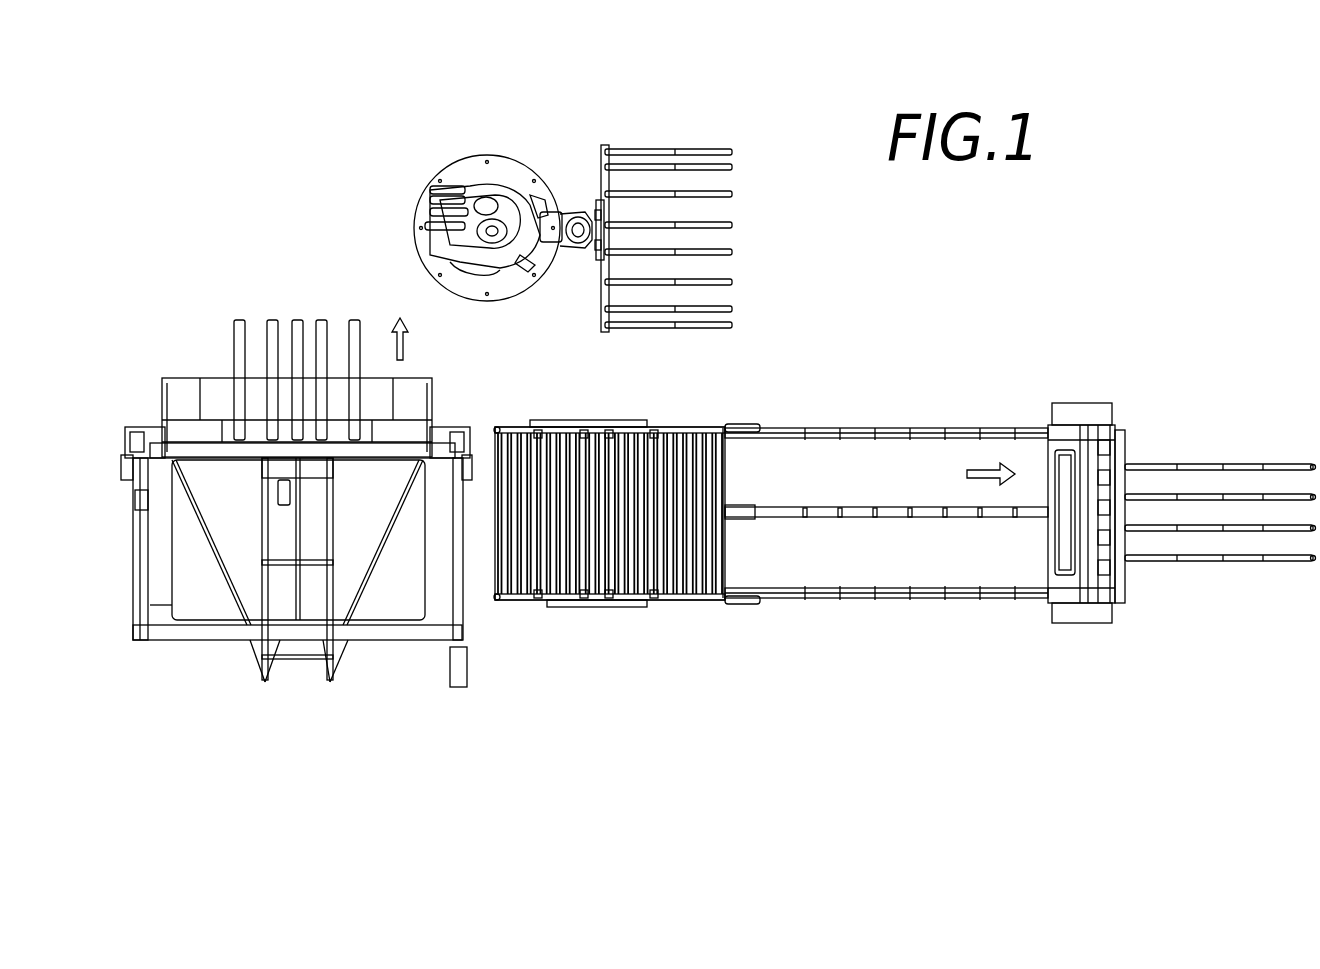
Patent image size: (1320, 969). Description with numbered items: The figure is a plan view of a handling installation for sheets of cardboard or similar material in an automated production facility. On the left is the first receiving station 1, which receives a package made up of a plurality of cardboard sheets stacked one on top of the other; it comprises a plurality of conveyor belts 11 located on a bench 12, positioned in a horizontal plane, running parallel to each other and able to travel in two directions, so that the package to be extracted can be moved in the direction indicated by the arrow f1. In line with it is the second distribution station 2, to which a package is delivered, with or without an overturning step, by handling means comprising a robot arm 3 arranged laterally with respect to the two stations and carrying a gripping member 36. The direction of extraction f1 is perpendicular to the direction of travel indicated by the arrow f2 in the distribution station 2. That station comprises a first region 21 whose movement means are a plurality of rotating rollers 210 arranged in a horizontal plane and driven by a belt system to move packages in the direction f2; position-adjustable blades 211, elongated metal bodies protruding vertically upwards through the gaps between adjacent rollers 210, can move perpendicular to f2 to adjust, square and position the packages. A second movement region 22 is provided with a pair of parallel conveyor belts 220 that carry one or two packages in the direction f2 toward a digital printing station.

The first receiving station 1 is at (460, 703).
The second distribution station 2 is at (1303, 706).
The robot arm 3 is at (418, 186).
The gripping fork 36 is at (577, 223).
The conveyor belts 11 is at (380, 510).
The bench 12 is at (462, 500).
The first region 21 is at (618, 407).
The second movement region 22 is at (903, 408).
The rotating rollers 210 is at (677, 603).
The blades 211 is at (608, 603).
The conveyor belts 220 is at (888, 472).
The direction of extraction f1 is at (392, 338).
The direction of travel f2 is at (992, 428).